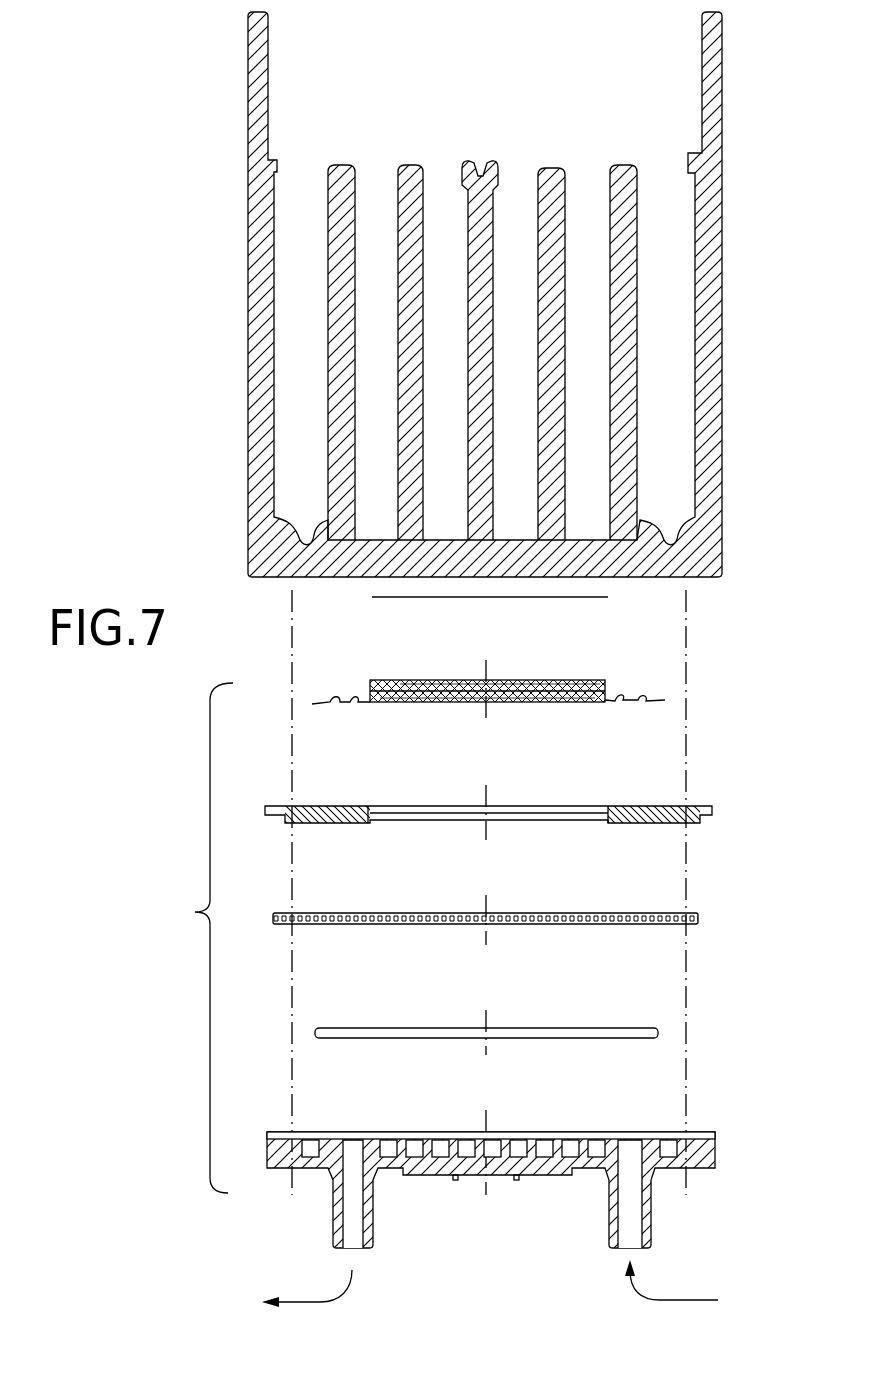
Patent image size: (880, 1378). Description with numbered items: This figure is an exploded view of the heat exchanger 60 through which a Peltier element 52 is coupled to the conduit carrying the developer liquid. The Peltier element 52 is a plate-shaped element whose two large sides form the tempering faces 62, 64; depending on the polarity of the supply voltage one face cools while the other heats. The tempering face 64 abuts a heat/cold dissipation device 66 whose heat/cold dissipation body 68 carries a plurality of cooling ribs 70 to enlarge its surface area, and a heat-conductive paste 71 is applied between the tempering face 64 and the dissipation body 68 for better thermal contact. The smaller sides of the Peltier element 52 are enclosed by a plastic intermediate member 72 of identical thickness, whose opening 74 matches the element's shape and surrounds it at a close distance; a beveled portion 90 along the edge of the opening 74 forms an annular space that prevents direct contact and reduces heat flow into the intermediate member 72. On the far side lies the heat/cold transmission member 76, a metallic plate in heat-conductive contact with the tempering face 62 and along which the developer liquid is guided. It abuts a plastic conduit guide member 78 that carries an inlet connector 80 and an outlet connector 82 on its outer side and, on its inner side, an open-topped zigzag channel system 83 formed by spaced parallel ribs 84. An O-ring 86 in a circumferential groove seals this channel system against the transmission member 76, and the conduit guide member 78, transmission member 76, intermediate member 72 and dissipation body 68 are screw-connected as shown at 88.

The Peltier element 52 is at (488, 699).
The heat exchanger 60 is at (195, 938).
The tempering face 62 is at (520, 702).
The tempering face 64 is at (411, 680).
The heat/cold dissipation device 66 is at (411, 294).
The heat/cold dissipation body 68 is at (273, 541).
The heat sink fins 70 is at (408, 165).
The heat-conductive paste 71 is at (372, 597).
The intermediate member 72 is at (506, 816).
The opening 74 is at (573, 812).
The heat/cold transmission member 76 is at (648, 913).
The conduit guide member 78 is at (504, 1166).
The inlet connector 80 is at (648, 1208).
The outlet connector 82 is at (333, 1218).
The housing contact cavities 83 is at (519, 1143).
The ribs 84 is at (588, 1148).
The O-ring 86 is at (656, 1028).
The screw connection 88 is at (292, 993).
The beveled portion 90 is at (368, 806).